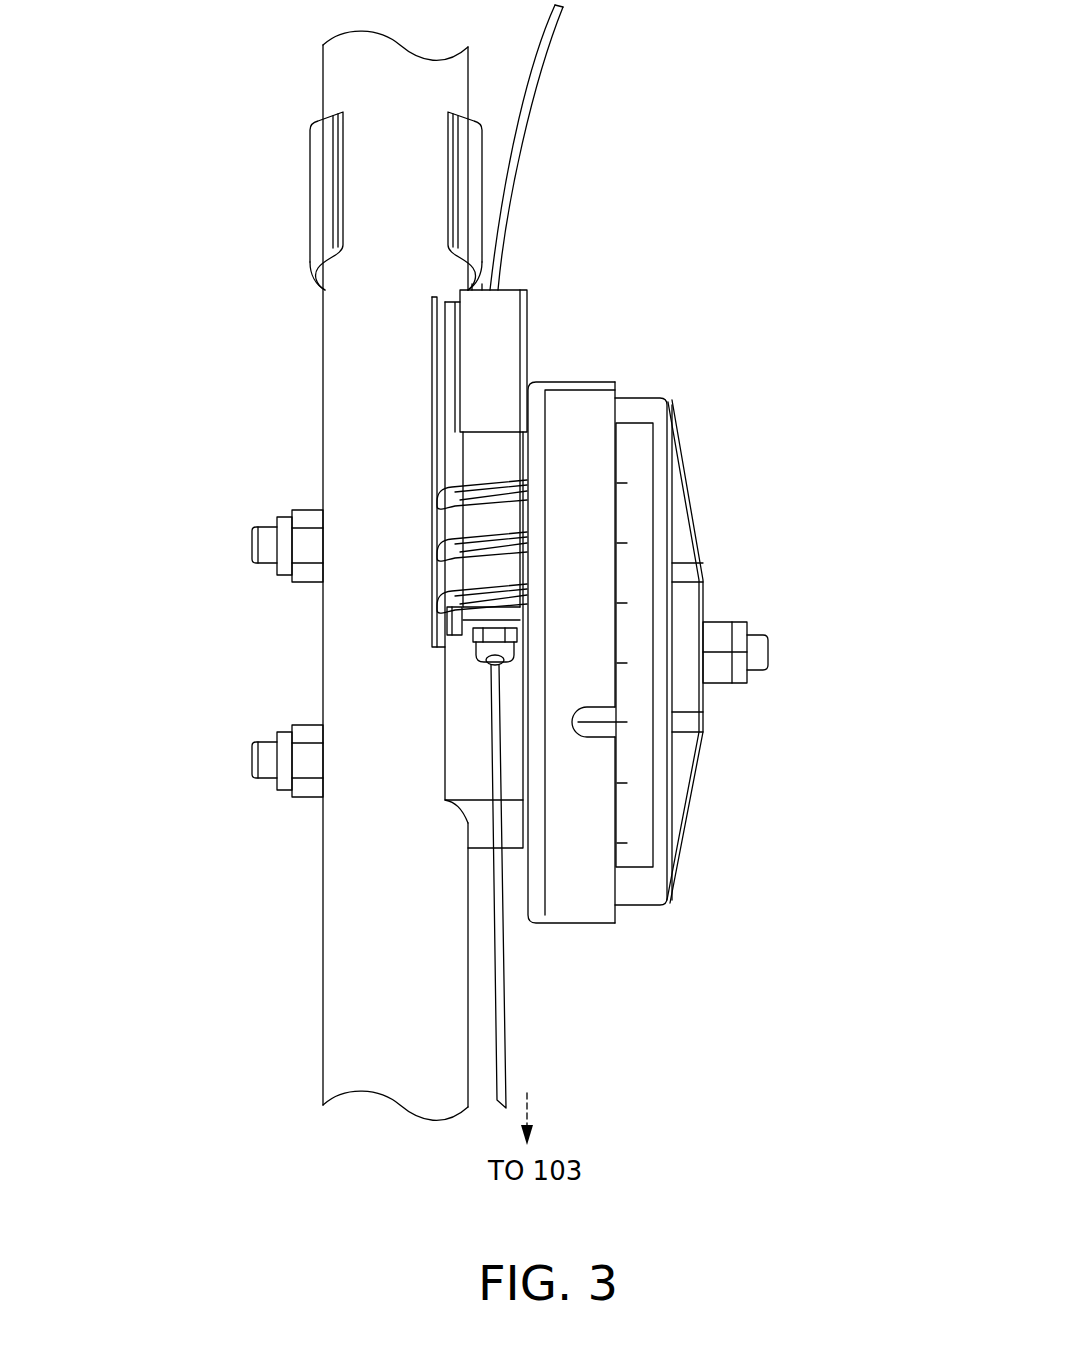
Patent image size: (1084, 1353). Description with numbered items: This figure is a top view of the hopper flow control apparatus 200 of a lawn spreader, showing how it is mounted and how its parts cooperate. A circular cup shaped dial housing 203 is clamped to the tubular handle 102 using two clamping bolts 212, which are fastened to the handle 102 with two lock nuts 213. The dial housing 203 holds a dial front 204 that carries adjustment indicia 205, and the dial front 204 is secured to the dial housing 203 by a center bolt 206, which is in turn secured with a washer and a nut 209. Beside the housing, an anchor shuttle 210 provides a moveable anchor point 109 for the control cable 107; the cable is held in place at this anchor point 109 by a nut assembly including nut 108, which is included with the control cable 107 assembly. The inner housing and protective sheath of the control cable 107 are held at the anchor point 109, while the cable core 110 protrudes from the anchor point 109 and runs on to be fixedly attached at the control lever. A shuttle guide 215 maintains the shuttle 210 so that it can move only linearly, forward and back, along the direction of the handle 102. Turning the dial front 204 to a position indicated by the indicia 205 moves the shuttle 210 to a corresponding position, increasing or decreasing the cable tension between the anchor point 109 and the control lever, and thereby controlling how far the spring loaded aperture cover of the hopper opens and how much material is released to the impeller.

The tubular handle 102 is at (323, 388).
The control cable 107 is at (540, 80).
The nut 108 is at (440, 640).
The anchor point 109 is at (470, 652).
The core 110 is at (506, 1004).
The hopper flow control apparatus 200 is at (728, 451).
The dial housing 203 is at (598, 382).
The dial front 204 is at (690, 812).
The adjustment indicia 205 is at (648, 517).
The center bolt 206 is at (770, 652).
The nut 209 is at (730, 622).
The anchor shuttle 210 is at (505, 315).
The clamping bolts 212 is at (250, 545).
The lock nuts 213 is at (302, 508).
The shuttle guide 215 is at (455, 520).